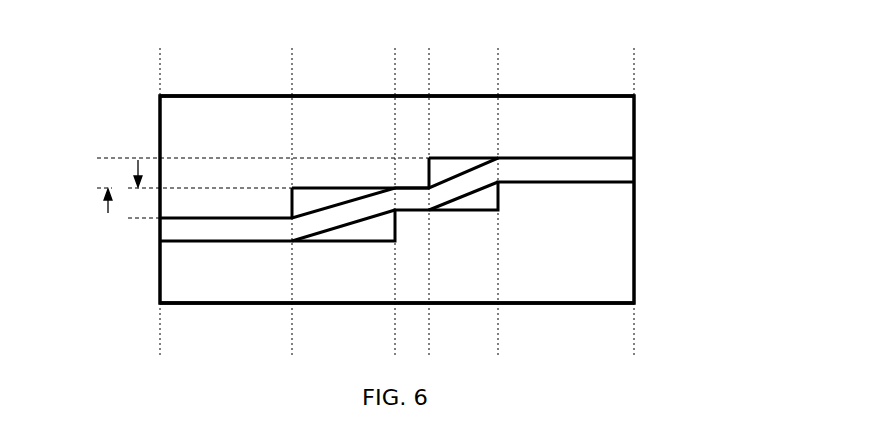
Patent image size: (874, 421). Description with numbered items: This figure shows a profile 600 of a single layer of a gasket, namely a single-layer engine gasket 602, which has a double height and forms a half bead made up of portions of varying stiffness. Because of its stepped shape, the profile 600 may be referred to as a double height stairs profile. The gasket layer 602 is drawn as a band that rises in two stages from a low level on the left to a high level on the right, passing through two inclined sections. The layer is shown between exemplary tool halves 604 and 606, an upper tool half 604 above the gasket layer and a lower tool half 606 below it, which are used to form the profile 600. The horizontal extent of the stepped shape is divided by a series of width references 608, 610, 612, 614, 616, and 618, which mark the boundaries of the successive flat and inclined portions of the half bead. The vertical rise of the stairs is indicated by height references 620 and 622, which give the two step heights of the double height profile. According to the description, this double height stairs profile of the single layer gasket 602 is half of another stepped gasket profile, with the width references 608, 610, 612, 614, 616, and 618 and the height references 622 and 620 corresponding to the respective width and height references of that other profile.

The profile 600 is at (695, 129).
The single-layer engine gasket 602 is at (625, 170).
The tool half 604 is at (613, 132).
The tool half 606 is at (613, 292).
The width reference 608 is at (160, 78).
The width reference 610 is at (292, 78).
The width reference 612 is at (395, 78).
The width reference 614 is at (429, 78).
The width reference 616 is at (498, 78).
The width reference 618 is at (634, 78).
The height reference 620 is at (107, 158).
The height reference 622 is at (138, 219).